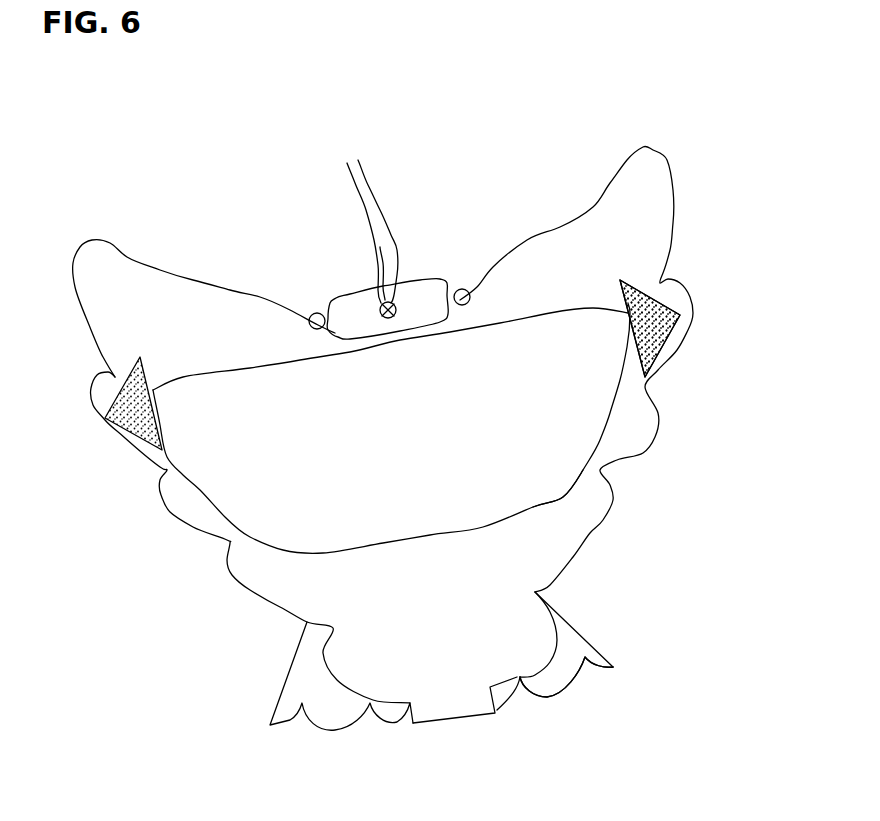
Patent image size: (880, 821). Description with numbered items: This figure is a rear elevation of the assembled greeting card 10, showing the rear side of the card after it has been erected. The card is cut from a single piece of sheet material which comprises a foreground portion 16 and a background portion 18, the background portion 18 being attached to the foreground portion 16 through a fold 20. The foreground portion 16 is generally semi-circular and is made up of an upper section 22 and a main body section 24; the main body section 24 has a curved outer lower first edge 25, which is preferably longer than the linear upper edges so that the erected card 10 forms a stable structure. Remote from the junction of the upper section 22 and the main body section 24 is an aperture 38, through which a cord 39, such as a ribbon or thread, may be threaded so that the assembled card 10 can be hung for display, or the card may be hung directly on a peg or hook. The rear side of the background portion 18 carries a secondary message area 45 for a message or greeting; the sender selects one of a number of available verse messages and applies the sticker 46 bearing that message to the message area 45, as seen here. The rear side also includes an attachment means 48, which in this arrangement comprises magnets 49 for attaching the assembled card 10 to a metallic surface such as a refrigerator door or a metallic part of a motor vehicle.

The greeting card 10 is at (205, 235).
The foreground portion 16 is at (565, 640).
The background portion 18 is at (257, 570).
The fold 20 is at (473, 713).
The upper section 22 is at (362, 313).
The main body section 24 is at (560, 620).
The curved outer lower first edge 25 is at (613, 667).
The aperture 38 is at (390, 311).
The cord 39 is at (362, 177).
The secondary message area 45 is at (563, 433).
The sticker 46 is at (563, 500).
The attachment means 48 is at (660, 320).
The magnets 49 is at (648, 348).